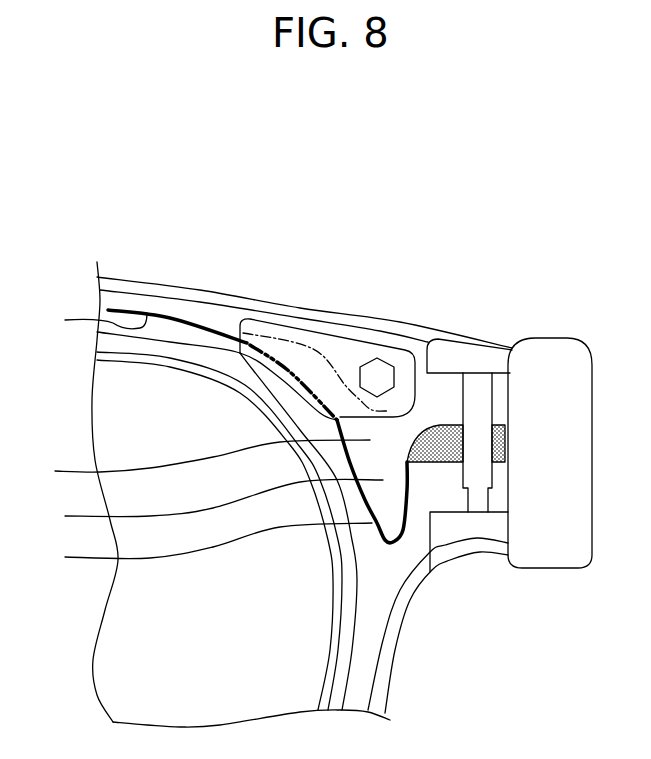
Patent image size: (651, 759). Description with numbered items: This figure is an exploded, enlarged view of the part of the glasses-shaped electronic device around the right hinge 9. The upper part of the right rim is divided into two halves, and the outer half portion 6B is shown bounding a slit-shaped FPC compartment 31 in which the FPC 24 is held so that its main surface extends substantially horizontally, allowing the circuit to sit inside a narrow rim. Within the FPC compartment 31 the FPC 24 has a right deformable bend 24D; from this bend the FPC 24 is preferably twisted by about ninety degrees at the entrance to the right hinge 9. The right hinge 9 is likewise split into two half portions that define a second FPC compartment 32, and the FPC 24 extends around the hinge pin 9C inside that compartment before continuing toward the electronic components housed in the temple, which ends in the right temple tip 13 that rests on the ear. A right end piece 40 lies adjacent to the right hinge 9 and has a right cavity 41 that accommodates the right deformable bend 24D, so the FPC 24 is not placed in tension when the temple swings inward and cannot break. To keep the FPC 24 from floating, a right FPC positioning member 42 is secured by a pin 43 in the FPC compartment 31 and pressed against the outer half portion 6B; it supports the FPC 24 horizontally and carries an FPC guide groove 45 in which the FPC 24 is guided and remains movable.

The outer half portion 6B is at (143, 295).
The FPC compartment 31 is at (192, 313).
The FPC 24 is at (455, 590).
The right deformable bend 24D is at (195, 546).
The right end piece 40 is at (198, 462).
The right cavity 41 is at (211, 503).
The right FPC positioning member 42 is at (338, 350).
The pin 43 is at (381, 368).
The FPC guide groove 45 is at (315, 342).
The FPC compartment 32 is at (435, 390).
The right hinge 9 is at (490, 360).
The hinge pin 9C is at (480, 472).
The right temple tip 13 is at (555, 358).